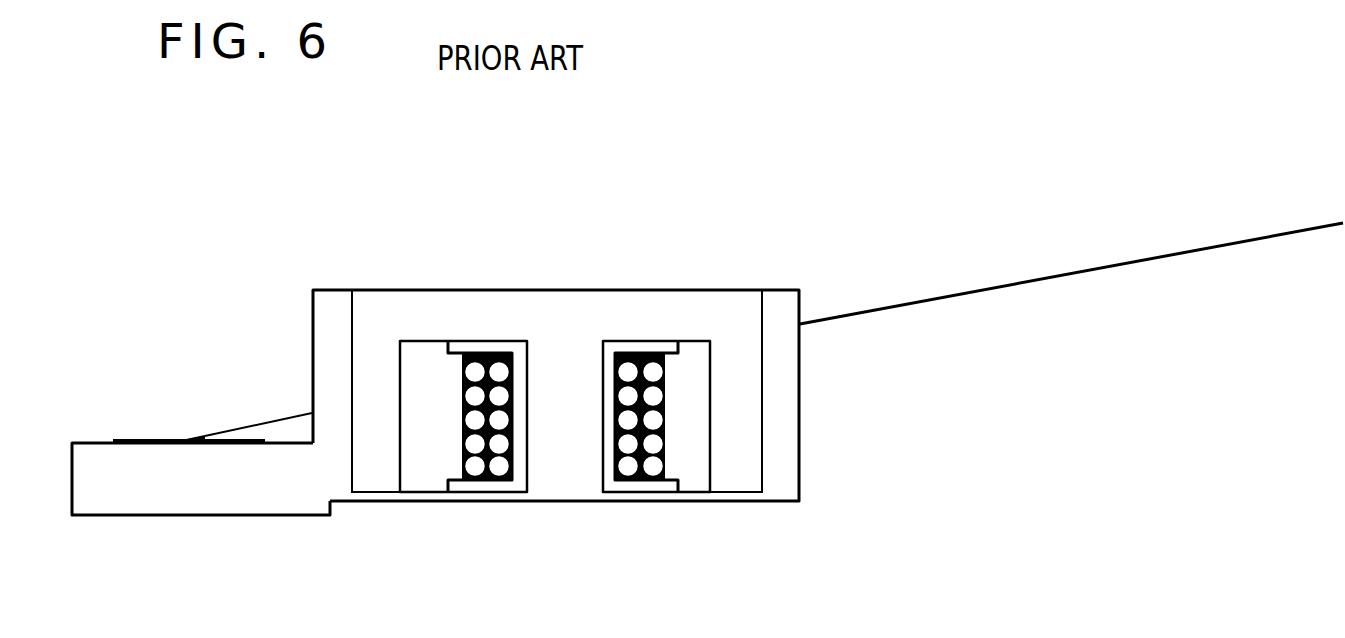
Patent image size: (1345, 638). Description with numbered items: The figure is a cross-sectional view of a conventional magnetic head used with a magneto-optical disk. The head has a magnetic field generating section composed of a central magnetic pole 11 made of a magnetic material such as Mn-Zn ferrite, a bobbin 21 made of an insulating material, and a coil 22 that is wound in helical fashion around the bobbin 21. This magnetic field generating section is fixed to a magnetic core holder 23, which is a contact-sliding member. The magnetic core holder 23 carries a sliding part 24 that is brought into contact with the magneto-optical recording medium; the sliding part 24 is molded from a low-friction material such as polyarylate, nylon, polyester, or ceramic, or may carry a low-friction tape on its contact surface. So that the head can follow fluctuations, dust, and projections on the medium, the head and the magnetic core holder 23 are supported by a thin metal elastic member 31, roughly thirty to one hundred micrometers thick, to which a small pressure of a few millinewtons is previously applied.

The central magnetic pole 11 is at (563, 485).
The bobbin 21 is at (480, 357).
The coil 22 is at (657, 357).
The magnetic core holder 23 is at (782, 444).
The sliding part 24 is at (175, 517).
The elastic member 31 is at (977, 291).